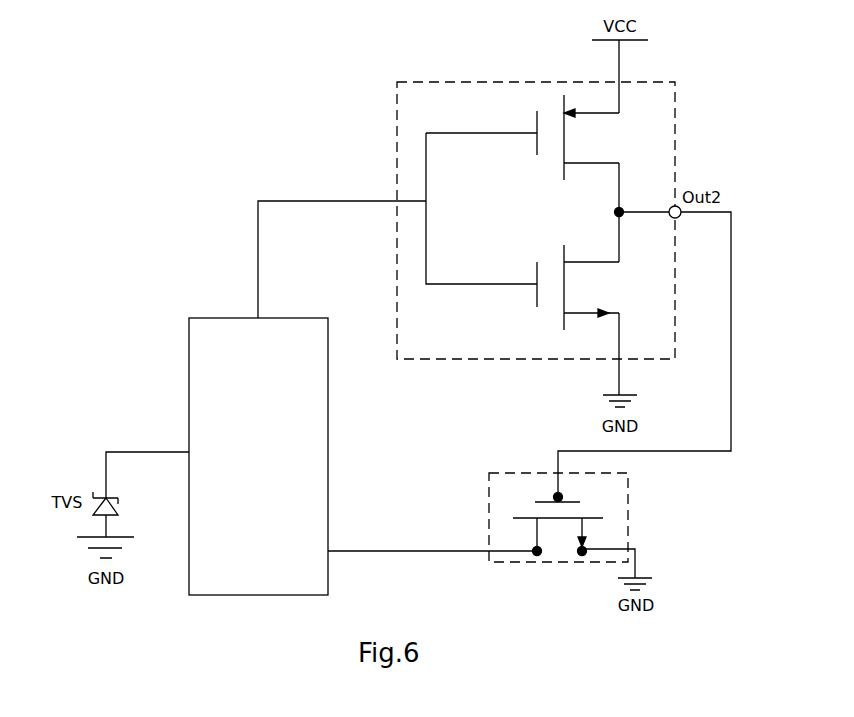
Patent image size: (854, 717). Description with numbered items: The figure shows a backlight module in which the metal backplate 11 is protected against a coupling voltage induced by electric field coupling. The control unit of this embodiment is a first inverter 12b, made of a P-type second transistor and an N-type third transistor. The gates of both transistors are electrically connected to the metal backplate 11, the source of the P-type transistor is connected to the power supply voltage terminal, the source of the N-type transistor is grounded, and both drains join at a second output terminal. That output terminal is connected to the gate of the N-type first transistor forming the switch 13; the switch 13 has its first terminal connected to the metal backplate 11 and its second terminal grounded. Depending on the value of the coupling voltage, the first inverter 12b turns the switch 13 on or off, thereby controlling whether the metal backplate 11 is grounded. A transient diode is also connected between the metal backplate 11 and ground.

The metal backplate 11 is at (258, 456).
The first inverter 12b is at (472, 82).
The switch 13 is at (512, 562).